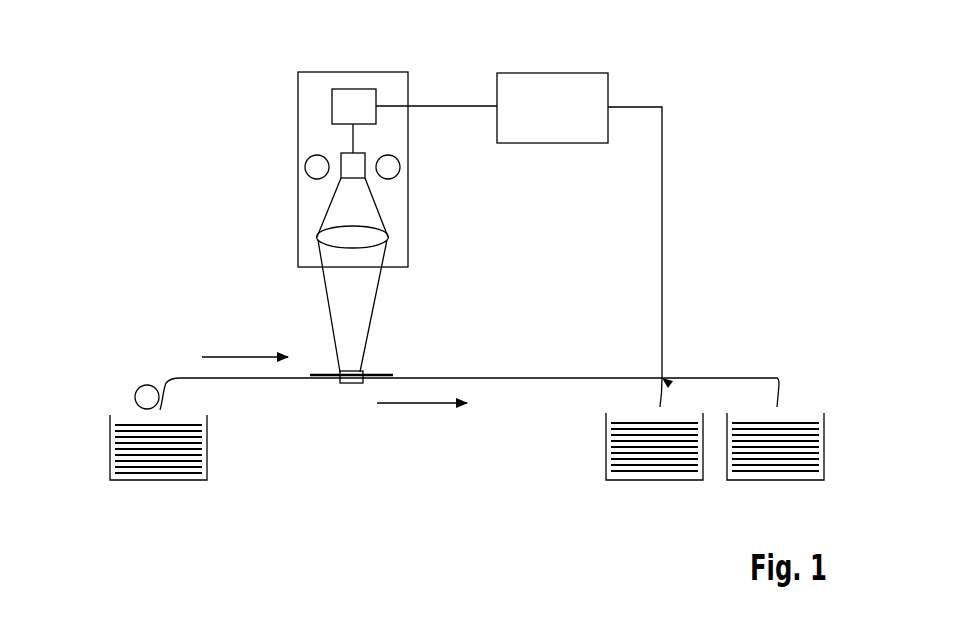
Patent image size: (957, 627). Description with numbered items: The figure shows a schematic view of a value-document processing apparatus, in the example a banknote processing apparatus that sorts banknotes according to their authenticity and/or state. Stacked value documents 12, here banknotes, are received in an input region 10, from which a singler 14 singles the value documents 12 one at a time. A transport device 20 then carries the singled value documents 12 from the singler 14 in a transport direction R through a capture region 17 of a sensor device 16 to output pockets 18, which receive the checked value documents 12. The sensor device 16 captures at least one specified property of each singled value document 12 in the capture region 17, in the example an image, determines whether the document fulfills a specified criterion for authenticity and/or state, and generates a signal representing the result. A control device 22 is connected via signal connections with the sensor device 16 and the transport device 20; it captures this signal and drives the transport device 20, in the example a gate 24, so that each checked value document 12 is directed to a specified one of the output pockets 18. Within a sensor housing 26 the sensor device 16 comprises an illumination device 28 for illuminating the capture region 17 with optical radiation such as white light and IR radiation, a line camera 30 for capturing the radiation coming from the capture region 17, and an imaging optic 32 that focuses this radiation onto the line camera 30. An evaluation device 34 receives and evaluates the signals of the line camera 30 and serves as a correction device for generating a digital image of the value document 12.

The input region 10 is at (177, 483).
The value documents 12 is at (135, 420).
The singler 14 is at (148, 385).
The sensor device 16 is at (260, 173).
The capture region 17 is at (362, 368).
The output pockets 18 is at (752, 485).
The transport device 20 is at (292, 400).
The control device 22 is at (537, 130).
The gate 24 is at (672, 368).
The sensor housing 26 is at (305, 72).
The illumination device 28 is at (308, 157).
The line camera 30 is at (366, 153).
The imaging optic 32 is at (388, 235).
The evaluation device 34 is at (360, 100).